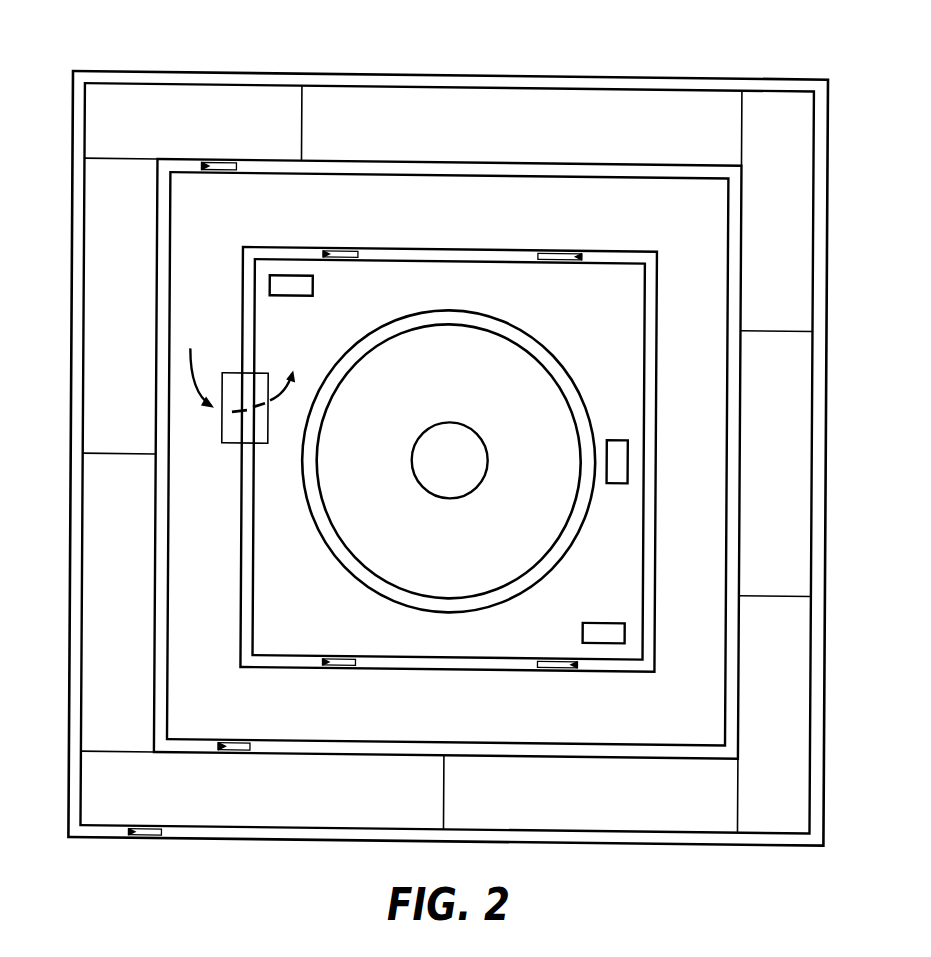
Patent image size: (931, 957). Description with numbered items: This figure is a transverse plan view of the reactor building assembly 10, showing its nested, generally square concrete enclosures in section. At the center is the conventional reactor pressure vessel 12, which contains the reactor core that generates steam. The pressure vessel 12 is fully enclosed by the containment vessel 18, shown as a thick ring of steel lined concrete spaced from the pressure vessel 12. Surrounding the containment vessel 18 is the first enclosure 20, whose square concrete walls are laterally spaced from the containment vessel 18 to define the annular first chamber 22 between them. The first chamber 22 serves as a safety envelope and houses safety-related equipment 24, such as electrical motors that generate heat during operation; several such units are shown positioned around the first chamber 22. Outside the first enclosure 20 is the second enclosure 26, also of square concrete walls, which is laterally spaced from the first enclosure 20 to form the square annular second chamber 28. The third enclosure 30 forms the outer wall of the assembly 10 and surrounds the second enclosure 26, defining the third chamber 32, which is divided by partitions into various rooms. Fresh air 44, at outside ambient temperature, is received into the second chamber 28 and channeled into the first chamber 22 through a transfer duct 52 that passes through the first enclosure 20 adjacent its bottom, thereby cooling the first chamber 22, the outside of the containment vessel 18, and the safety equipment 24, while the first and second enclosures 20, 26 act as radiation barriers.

The reactor building assembly 10 is at (760, 30).
The reactor pressure vessel 12 is at (473, 446).
The containment vessel 18 is at (451, 451).
The first enclosure 20 is at (171, 559).
The first chamber 22 is at (286, 584).
The safety-related equipment 24 is at (452, 458).
The second enclosure 26 is at (84, 599).
The second chamber 28 is at (210, 485).
The third enclosure 30 is at (426, 457).
The third chamber 32 is at (61, 497).
The fresh air 44 is at (243, 368).
The transfer duct 52 is at (259, 439).